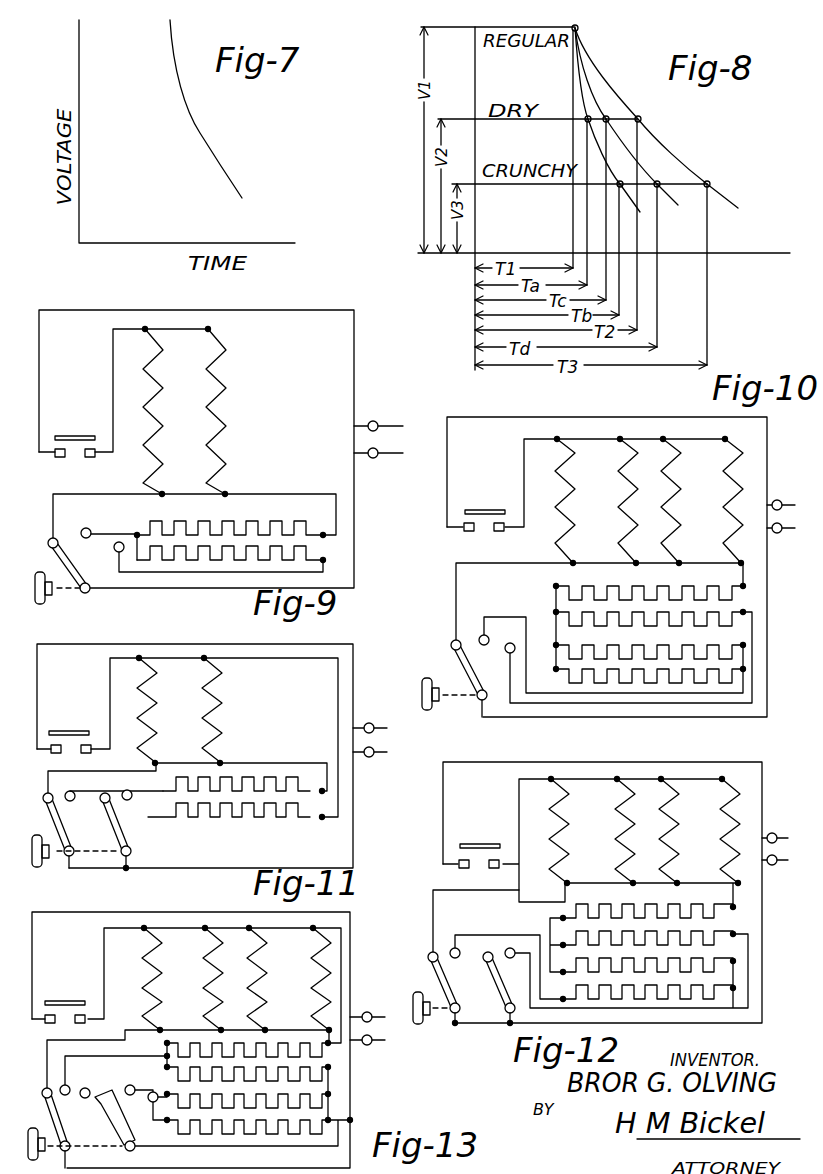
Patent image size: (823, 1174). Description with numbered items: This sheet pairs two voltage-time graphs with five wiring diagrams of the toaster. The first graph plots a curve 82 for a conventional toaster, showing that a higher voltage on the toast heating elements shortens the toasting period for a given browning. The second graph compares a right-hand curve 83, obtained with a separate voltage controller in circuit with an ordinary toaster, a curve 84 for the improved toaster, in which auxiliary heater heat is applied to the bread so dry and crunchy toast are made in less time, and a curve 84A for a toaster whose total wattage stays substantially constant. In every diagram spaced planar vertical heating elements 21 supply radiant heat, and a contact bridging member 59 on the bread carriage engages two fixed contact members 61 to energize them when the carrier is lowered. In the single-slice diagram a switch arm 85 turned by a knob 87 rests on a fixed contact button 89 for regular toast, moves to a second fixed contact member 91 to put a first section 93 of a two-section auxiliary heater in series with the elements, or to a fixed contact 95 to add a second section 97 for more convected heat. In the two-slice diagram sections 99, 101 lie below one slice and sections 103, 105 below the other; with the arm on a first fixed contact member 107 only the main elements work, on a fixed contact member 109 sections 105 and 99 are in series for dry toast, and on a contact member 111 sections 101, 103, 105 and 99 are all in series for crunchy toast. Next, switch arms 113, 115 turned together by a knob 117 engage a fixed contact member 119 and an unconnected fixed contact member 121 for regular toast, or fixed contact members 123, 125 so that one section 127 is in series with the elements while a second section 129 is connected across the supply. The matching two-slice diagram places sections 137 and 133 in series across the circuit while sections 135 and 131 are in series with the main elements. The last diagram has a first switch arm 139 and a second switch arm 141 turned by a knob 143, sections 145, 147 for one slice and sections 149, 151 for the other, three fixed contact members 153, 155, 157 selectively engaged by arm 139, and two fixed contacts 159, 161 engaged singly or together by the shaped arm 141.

In FIG. 9, the heating elements 21 is at (210, 405).
In FIG. 10, the heating elements 21 is at (615, 488).
In FIG. 11, the heating elements 21 is at (205, 704).
In FIG. 12, the heating elements 21 is at (615, 827).
In FIG. 13, the heating elements 21 is at (210, 982).
In FIG. 9, the contact bridging member 59 is at (73, 435).
In FIG. 10, the contact bridging member 59 is at (478, 510).
In FIG. 11, the contact bridging member 59 is at (68, 731).
In FIG. 12, the contact bridging member 59 is at (477, 844).
In FIG. 13, the contact bridging member 59 is at (62, 1001).
In FIG. 9, the fixed contact members 61 is at (90, 458).
In FIG. 10, the fixed contact members 61 is at (500, 532).
In FIG. 11, the fixed contact members 61 is at (71, 749).
In FIG. 12, the fixed contact members 61 is at (497, 869).
In FIG. 13, the fixed contact members 61 is at (53, 1023).
In FIG. 7, the curve 82 is at (205, 143).
In FIG. 8, the right-hand curve 83 is at (693, 173).
In FIG. 8, the curve 84 is at (644, 170).
In FIG. 8, the curve 84A is at (586, 108).
In FIG. 9, the switch arm 85 is at (79, 570).
In FIG. 10, the switch arm 85 is at (448, 668).
In FIG. 9, the knob 87 is at (41, 602).
In FIG. 10, the knob 87 is at (430, 710).
In FIG. 9, the fixed contact button 89 is at (49, 539).
In FIG. 9, the second fixed contact member 91 is at (86, 528).
In FIG. 9, the first section of auxiliary heater 93 is at (312, 522).
In FIG. 9, the fixed contact 95 is at (115, 551).
In FIG. 9, the second section of auxiliary heating element 97 is at (313, 548).
In FIG. 10, the auxiliary heating element section 99 is at (727, 605).
In FIG. 10, the auxiliary heating element section 101 is at (725, 630).
In FIG. 10, the auxiliary heating element section 103 is at (727, 660).
In FIG. 10, the auxiliary heating element section 105 is at (727, 686).
In FIG. 10, the first fixed contact member 107 is at (452, 641).
In FIG. 10, the fixed contact member 109 is at (480, 636).
In FIG. 10, the contact member 111 is at (507, 643).
In FIG. 11, the switch arm 113 is at (56, 860).
In FIG. 12, the switch arm 113 is at (436, 992).
In FIG. 11, the switch arm 115 is at (131, 848).
In FIG. 12, the switch arm 115 is at (497, 986).
In FIG. 11, the knob 117 is at (31, 868).
In FIG. 12, the knob 117 is at (416, 1026).
In FIG. 11, the fixed contact member 119 is at (47, 800).
In FIG. 12, the fixed contact member 119 is at (428, 955).
In FIG. 11, the fixed contact member 121 is at (101, 804).
In FIG. 12, the fixed contact member 121 is at (485, 952).
In FIG. 11, the fixed contact member 123 is at (70, 801).
In FIG. 12, the fixed contact member 123 is at (452, 948).
In FIG. 11, the fixed contact member 125 is at (132, 799).
In FIG. 12, the fixed contact member 125 is at (510, 948).
In FIG. 11, the section of auxiliary heating element 127 is at (300, 792).
In FIG. 11, the second section of auxiliary heating element 129 is at (295, 820).
In FIG. 12, the auxiliary heating element section 131 is at (712, 918).
In FIG. 12, the auxiliary heating element section 133 is at (712, 945).
In FIG. 12, the auxiliary heating element section 135 is at (712, 970).
In FIG. 12, the auxiliary heating element section 137 is at (712, 1000).
In FIG. 13, the first switch arm 139 is at (57, 1112).
In FIG. 13, the second switch arm 141 is at (117, 1130).
In FIG. 13, the knob 143 is at (34, 1130).
In FIG. 13, the auxiliary heating element section 145 is at (316, 1050).
In FIG. 13, the auxiliary heating element section 147 is at (305, 1075).
In FIG. 13, the auxiliary heating element section 149 is at (302, 1093).
In FIG. 13, the second auxiliary heating element section 151 is at (300, 1120).
In FIG. 13, the fixed contact member 153 is at (46, 1092).
In FIG. 13, the fixed contact member 155 is at (64, 1085).
In FIG. 13, the fixed contact member 157 is at (85, 1088).
In FIG. 13, the fixed contact 159 is at (133, 1095).
In FIG. 13, the fixed contact 161 is at (152, 1092).